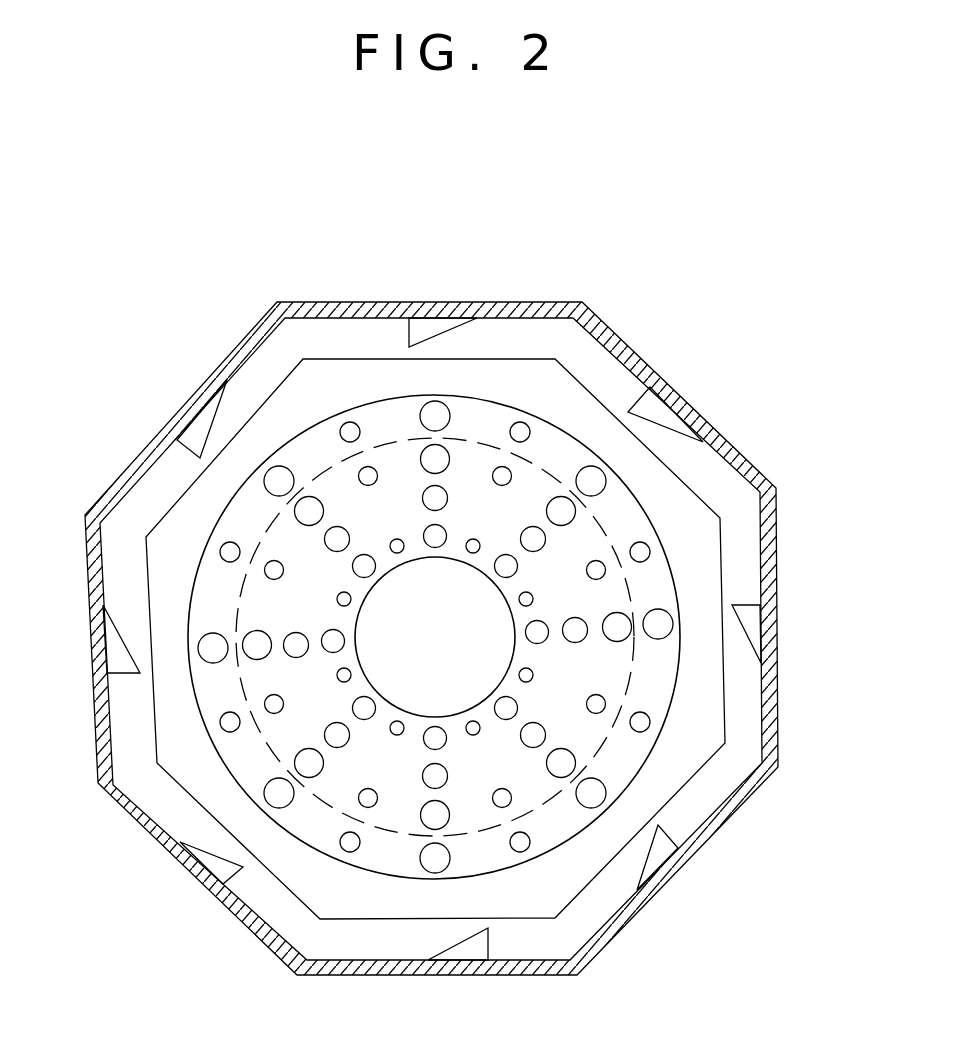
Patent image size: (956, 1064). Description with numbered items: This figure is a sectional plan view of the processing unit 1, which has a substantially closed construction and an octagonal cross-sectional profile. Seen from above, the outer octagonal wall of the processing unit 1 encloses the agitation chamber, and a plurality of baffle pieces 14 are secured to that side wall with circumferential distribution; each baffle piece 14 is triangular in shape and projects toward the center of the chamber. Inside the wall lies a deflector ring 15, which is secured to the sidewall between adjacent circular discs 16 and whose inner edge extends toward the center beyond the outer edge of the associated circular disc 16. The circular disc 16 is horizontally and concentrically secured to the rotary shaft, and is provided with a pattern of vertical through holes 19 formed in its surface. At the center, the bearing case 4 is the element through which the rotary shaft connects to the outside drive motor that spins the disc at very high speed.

The processing unit 1 is at (162, 381).
The bearing case 4 is at (435, 637).
The baffle piece 14 is at (427, 328).
The deflector ring 15 is at (673, 763).
The circular disc 16 is at (312, 827).
The through hole 19 is at (643, 547).